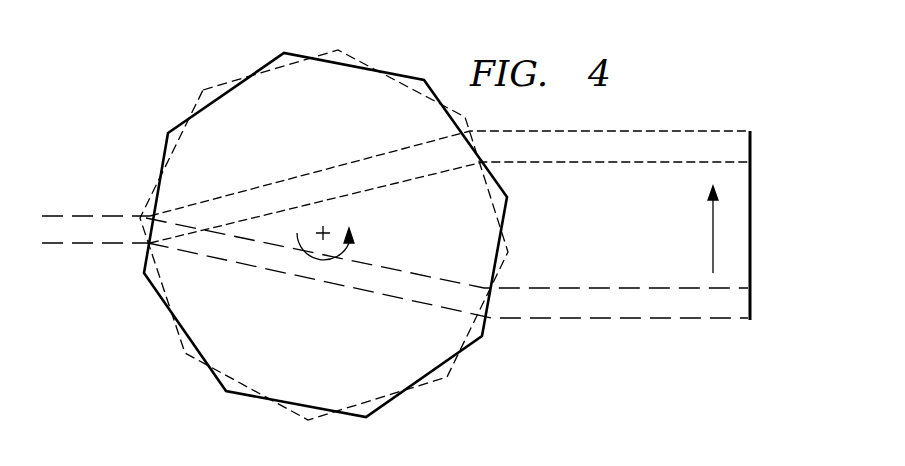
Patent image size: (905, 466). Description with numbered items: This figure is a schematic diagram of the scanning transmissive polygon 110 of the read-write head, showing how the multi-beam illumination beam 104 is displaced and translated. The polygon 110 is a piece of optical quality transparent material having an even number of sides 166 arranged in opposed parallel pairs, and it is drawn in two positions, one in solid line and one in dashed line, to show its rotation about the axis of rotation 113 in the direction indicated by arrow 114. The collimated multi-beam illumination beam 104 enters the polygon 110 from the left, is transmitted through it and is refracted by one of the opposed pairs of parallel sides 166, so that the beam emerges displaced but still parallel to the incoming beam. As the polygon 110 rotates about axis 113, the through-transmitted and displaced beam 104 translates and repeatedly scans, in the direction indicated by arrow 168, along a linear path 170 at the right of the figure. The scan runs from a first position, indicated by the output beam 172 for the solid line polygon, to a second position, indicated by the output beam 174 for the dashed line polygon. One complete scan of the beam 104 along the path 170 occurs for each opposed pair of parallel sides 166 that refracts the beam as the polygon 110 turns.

The multi-beam illumination beam 104 is at (110, 248).
The scanning transmissive polygon 110 is at (190, 362).
The axis of rotation 113 is at (330, 229).
The arrow 114 is at (354, 248).
The sides 166 is at (187, 119).
The arrow 168 is at (710, 240).
The linear path 170 is at (754, 252).
The output beam 172 is at (614, 322).
The output beam 174 is at (660, 130).